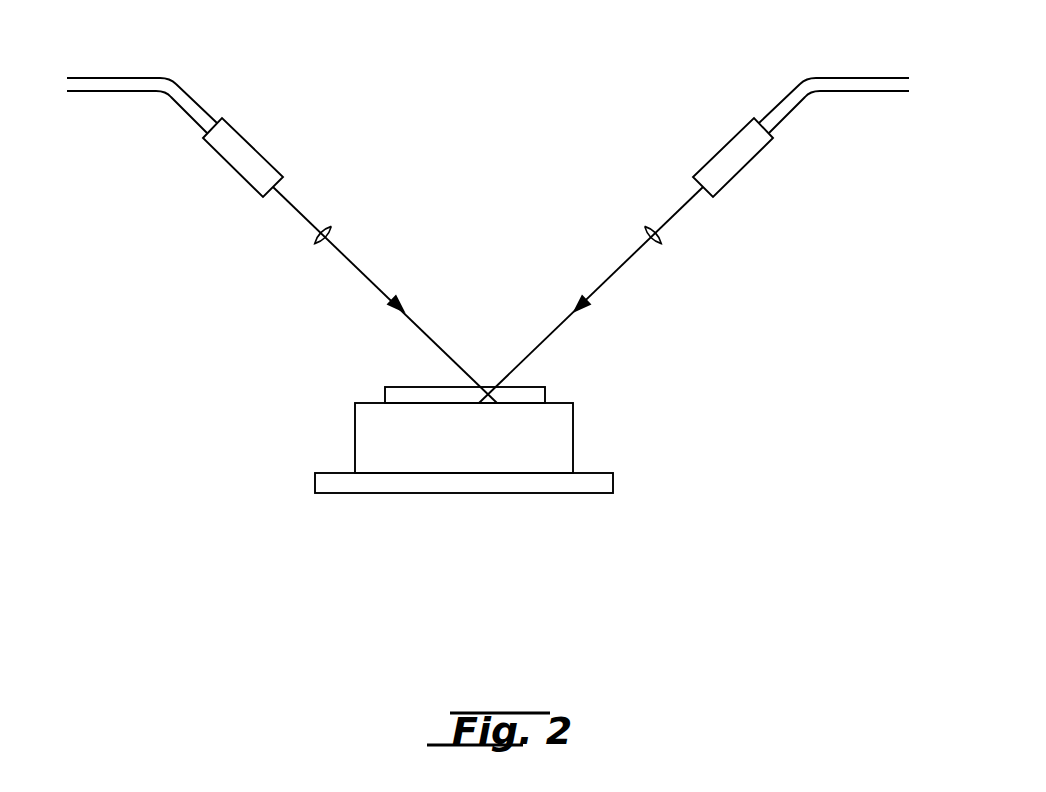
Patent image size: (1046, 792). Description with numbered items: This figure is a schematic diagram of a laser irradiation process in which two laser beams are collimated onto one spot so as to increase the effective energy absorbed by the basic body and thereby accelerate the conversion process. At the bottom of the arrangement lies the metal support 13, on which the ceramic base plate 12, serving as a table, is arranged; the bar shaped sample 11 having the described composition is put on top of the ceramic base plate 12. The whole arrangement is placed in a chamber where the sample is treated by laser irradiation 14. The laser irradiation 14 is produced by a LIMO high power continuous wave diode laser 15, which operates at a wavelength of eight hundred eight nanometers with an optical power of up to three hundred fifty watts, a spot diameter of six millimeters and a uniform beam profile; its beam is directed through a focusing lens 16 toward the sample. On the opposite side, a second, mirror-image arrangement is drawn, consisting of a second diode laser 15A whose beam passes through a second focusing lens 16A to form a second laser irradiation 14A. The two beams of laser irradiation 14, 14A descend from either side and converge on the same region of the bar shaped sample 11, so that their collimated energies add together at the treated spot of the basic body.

The bar shaped sample 11 is at (533, 397).
The ceramic base plate 12 is at (558, 453).
The metal support 13 is at (595, 482).
The laser irradiation 14 is at (407, 303).
The second light beam 14A is at (572, 300).
The high power continuous wave diode laser 15 is at (243, 155).
The second optical fiber ferrule 15A is at (723, 163).
The focusing lens 16 is at (330, 226).
The second lens 16A is at (643, 228).